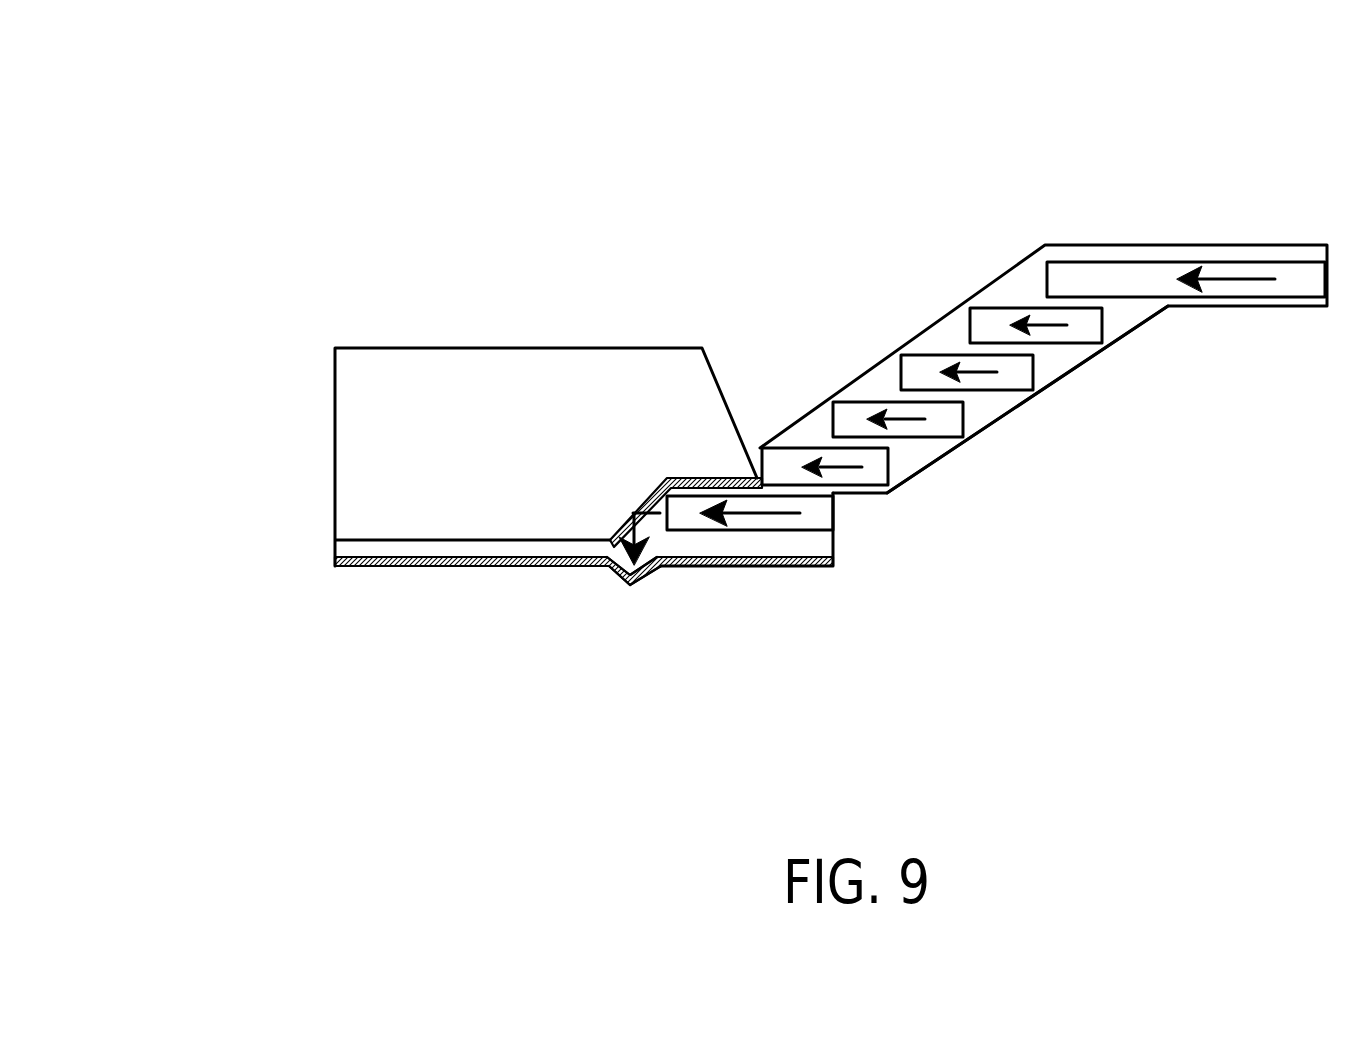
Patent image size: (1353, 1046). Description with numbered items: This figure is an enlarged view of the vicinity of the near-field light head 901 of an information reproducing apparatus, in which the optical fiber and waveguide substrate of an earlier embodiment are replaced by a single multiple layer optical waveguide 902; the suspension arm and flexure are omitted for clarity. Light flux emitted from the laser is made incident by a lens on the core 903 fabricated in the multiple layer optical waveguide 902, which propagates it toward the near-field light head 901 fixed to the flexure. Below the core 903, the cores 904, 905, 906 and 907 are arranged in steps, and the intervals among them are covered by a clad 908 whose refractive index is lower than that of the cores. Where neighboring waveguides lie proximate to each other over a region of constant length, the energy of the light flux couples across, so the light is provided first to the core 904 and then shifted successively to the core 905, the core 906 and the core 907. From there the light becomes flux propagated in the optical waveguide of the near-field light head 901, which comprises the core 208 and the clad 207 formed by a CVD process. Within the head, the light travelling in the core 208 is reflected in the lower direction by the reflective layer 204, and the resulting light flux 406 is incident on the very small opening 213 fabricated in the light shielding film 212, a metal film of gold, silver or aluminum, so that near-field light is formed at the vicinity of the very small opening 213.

The near-field light head 901 is at (333, 350).
The reflective layer 204 is at (625, 520).
The light shielding film 212 is at (462, 567).
The very small opening 213 is at (632, 586).
The light flux 406 is at (660, 513).
The core 208 is at (835, 515).
The clad 207 is at (835, 542).
The multiple layer optical waveguide 902 is at (1150, 317).
The clad 908 is at (1043, 360).
The core 907 is at (783, 447).
The core 906 is at (858, 402).
The core 905 is at (929, 355).
The core 904 is at (1002, 308).
The core 903 is at (1250, 262).